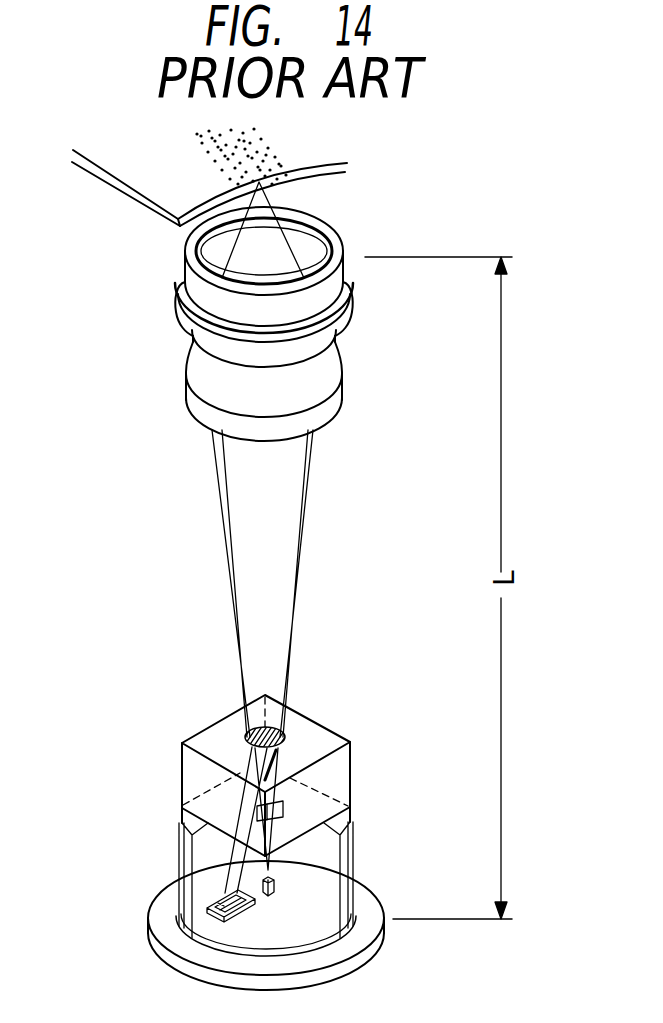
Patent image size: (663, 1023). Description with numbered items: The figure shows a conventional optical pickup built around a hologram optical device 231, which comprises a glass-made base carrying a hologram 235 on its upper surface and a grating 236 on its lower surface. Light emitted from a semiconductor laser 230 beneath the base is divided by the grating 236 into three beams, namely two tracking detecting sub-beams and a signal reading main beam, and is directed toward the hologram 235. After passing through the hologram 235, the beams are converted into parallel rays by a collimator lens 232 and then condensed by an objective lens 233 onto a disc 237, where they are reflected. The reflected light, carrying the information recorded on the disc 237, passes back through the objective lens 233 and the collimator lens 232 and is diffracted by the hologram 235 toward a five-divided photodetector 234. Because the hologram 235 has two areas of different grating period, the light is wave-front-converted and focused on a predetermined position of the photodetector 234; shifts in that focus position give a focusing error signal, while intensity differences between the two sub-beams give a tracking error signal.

The semiconductor laser 230 is at (262, 887).
The hologram optical device 231 is at (204, 724).
The collimator lens 232 is at (186, 386).
The objective lens 233 is at (177, 296).
The 5-divided photodetector 234 is at (213, 914).
The hologram 235 is at (246, 730).
The grating 236 is at (257, 809).
The disc 237 is at (143, 204).